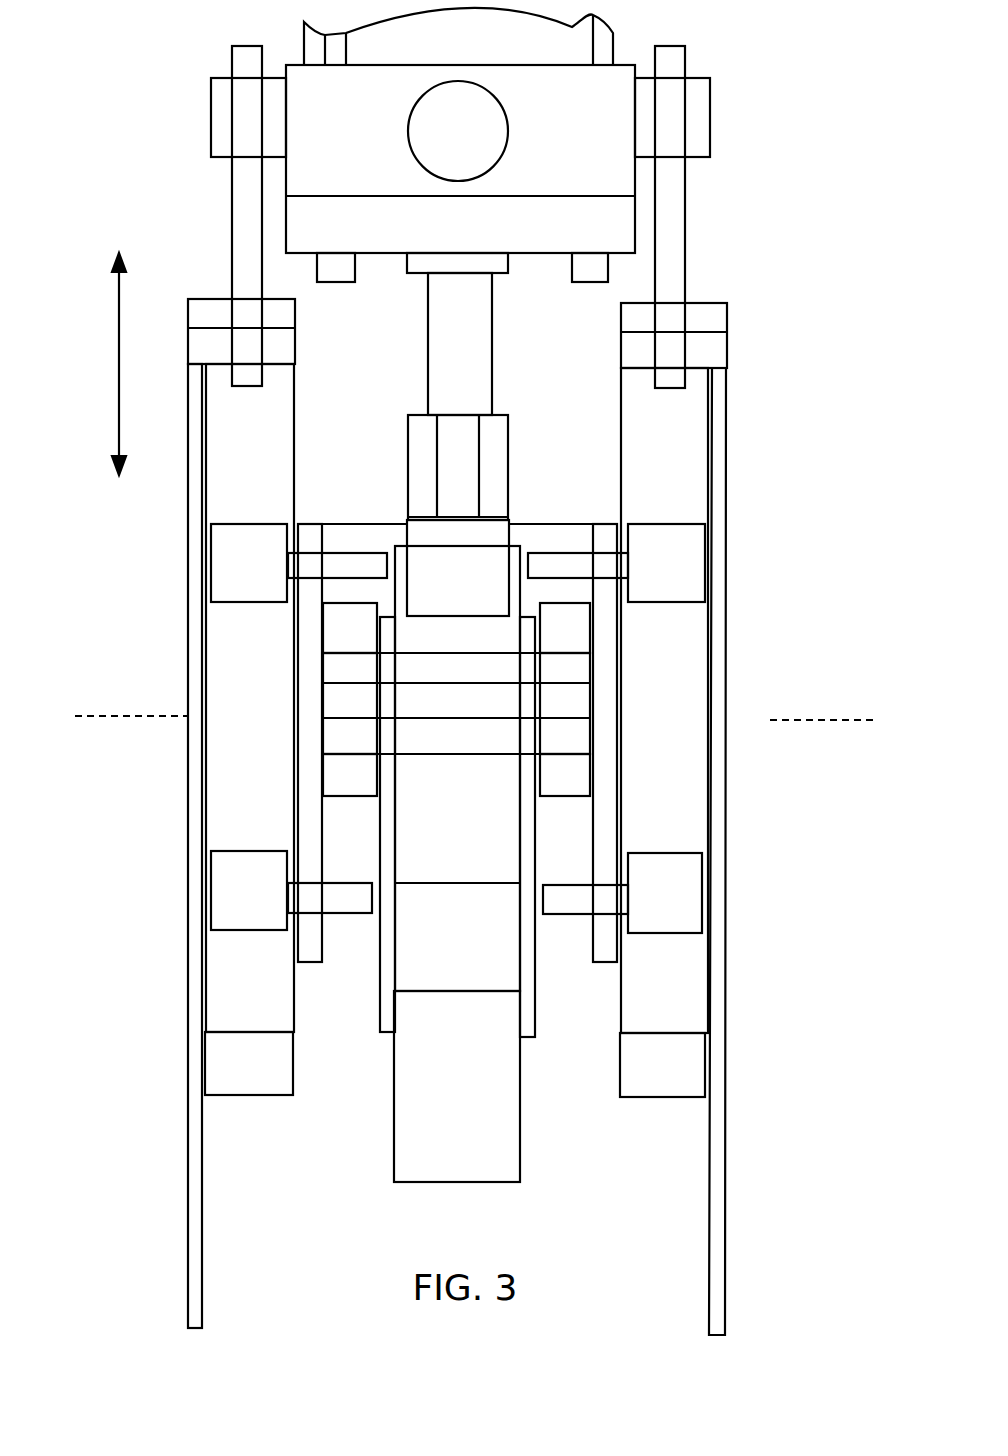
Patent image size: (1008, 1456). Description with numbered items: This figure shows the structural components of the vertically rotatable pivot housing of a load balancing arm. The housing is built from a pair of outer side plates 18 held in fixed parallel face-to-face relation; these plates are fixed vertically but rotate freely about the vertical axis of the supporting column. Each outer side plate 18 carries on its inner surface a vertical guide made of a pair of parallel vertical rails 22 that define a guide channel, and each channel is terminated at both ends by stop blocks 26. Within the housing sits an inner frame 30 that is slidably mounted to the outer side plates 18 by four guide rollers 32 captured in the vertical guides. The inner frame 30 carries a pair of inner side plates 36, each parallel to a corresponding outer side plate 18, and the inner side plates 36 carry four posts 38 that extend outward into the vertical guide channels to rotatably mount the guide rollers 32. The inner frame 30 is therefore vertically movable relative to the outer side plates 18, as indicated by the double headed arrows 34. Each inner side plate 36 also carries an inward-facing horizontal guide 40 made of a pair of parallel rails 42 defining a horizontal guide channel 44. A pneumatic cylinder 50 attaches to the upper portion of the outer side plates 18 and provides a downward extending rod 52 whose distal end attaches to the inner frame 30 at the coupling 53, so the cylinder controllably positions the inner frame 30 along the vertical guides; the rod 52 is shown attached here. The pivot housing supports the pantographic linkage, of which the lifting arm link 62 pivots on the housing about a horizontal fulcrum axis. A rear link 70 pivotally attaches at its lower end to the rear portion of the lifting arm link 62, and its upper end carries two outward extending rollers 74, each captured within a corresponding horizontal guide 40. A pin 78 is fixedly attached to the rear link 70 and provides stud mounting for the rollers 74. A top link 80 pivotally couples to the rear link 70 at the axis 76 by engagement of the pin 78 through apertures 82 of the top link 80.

The outer side plates 18 is at (187, 810).
The vertical rails 22 is at (282, 435).
The stop blocks 26 is at (288, 344).
The inner frame 30 is at (457, 722).
The guide rollers 32 is at (240, 590).
The double headed arrows 34 is at (118, 342).
The inner side plates 36 is at (313, 857).
The posts 38 is at (310, 562).
The horizontal guide 40 is at (520, 701).
The parallel rails 42 is at (332, 623).
The horizontal guide channel 44 is at (350, 752).
The pneumatic cylinder 50 is at (558, 62).
The rod 52 is at (482, 342).
The coupling 53 is at (395, 453).
The lifting arm link 62 is at (432, 1167).
The rear link 70 is at (493, 855).
The rollers 74 is at (355, 671).
The axis 76 is at (105, 716).
The pin 78 is at (444, 706).
The top link 80 is at (387, 828).
The apertures 82 is at (387, 683).